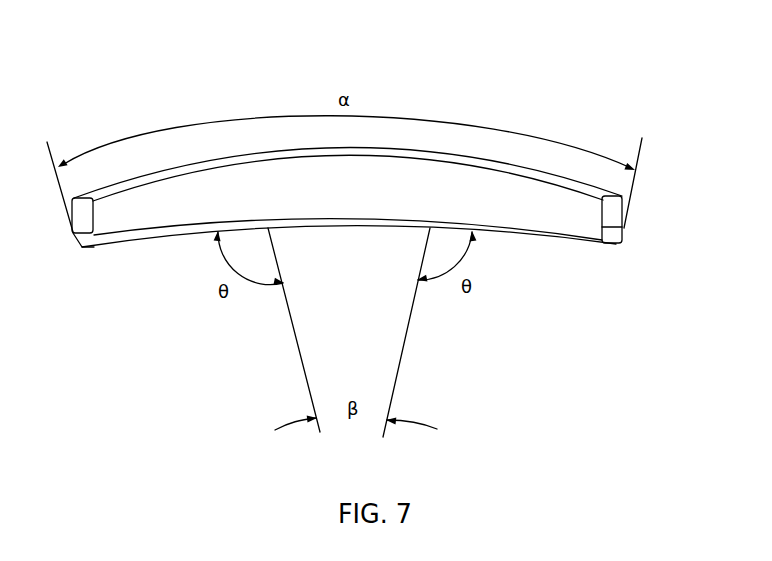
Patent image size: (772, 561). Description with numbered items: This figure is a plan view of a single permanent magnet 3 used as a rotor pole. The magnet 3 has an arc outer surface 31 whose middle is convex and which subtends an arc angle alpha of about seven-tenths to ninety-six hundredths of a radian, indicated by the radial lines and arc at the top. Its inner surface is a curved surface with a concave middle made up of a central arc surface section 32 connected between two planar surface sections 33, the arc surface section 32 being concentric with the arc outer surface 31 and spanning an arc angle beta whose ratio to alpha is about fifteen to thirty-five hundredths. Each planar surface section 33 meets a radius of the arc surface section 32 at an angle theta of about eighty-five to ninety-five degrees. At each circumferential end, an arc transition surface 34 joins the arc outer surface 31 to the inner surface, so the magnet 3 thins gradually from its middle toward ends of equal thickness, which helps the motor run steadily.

The permanent magnet 3 is at (366, 168).
The arc outer surface 31 is at (575, 188).
The arc surface section 32 is at (362, 220).
The planar surface section 33 is at (157, 241).
The arc transition surface 34 is at (78, 241).